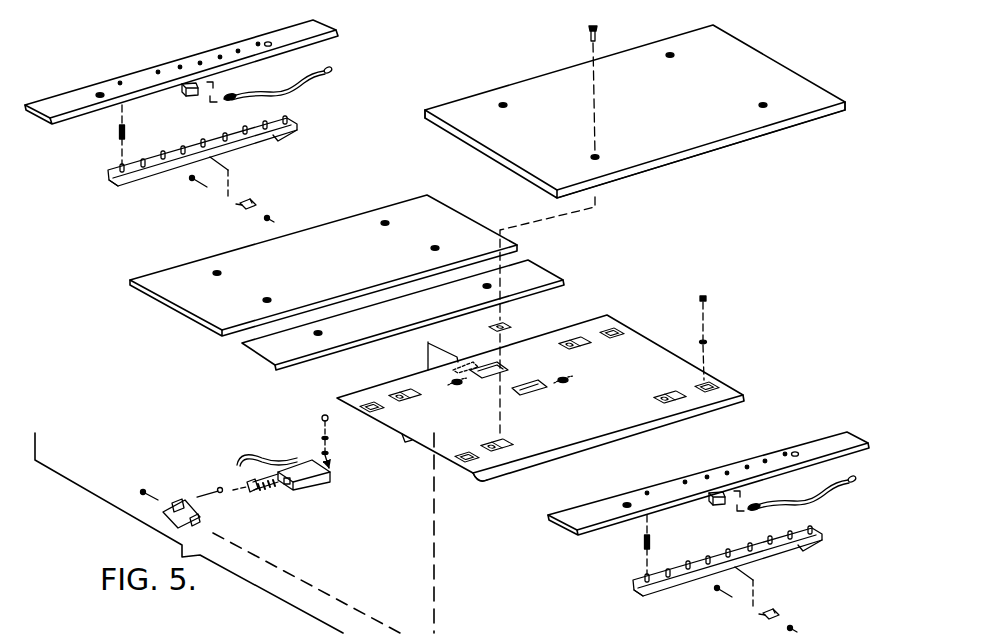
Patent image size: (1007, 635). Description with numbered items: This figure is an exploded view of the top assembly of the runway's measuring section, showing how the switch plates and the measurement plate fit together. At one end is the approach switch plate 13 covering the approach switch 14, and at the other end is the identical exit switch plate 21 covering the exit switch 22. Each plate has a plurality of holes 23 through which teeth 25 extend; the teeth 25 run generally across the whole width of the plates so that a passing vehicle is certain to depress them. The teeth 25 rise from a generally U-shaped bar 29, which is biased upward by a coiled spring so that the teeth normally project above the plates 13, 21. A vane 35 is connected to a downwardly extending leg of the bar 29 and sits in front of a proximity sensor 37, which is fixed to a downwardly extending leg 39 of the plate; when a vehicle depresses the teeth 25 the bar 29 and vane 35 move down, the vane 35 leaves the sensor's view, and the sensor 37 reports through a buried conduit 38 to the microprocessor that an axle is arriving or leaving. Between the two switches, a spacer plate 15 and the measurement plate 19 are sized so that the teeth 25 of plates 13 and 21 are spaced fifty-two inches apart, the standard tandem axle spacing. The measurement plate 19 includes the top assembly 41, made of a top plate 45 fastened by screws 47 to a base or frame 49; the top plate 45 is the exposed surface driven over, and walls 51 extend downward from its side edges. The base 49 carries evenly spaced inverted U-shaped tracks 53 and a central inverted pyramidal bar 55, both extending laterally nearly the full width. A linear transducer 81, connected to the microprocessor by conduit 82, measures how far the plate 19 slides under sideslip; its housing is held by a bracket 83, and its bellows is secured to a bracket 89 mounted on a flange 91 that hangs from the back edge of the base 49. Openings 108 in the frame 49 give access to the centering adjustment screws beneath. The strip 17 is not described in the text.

The approach switch plate 13 is at (310, 35).
The approach switch 14 is at (96, 182).
The spacer plate 15 is at (339, 235).
The spacer strip 17 is at (266, 346).
The measurement plate 19 is at (755, 42).
The exit switch plate 21 is at (834, 446).
The exit switch 22 is at (607, 571).
The holes 23 is at (181, 66).
The teeth 25 is at (205, 142).
The U-shaped bar 29 is at (123, 184).
The vane 35 is at (253, 200).
The proximity sensor 37 is at (236, 94).
The conduit 38 is at (307, 79).
The downwardly extending leg 39 is at (183, 92).
The top assembly 41 is at (688, 281).
The top plate 45 is at (705, 128).
The screws 47 is at (599, 27).
The base or frame 49 is at (632, 331).
The walls 51 is at (430, 128).
The inverted U-shaped tracks 53 is at (479, 481).
The inverted pyramidal bar 55 is at (402, 438).
The linear transducer 81 is at (291, 498).
The conduit 82 is at (250, 453).
The bracket 83 is at (332, 477).
The bracket 89 is at (175, 500).
The flange 91 is at (482, 357).
The openings 108 is at (548, 378).